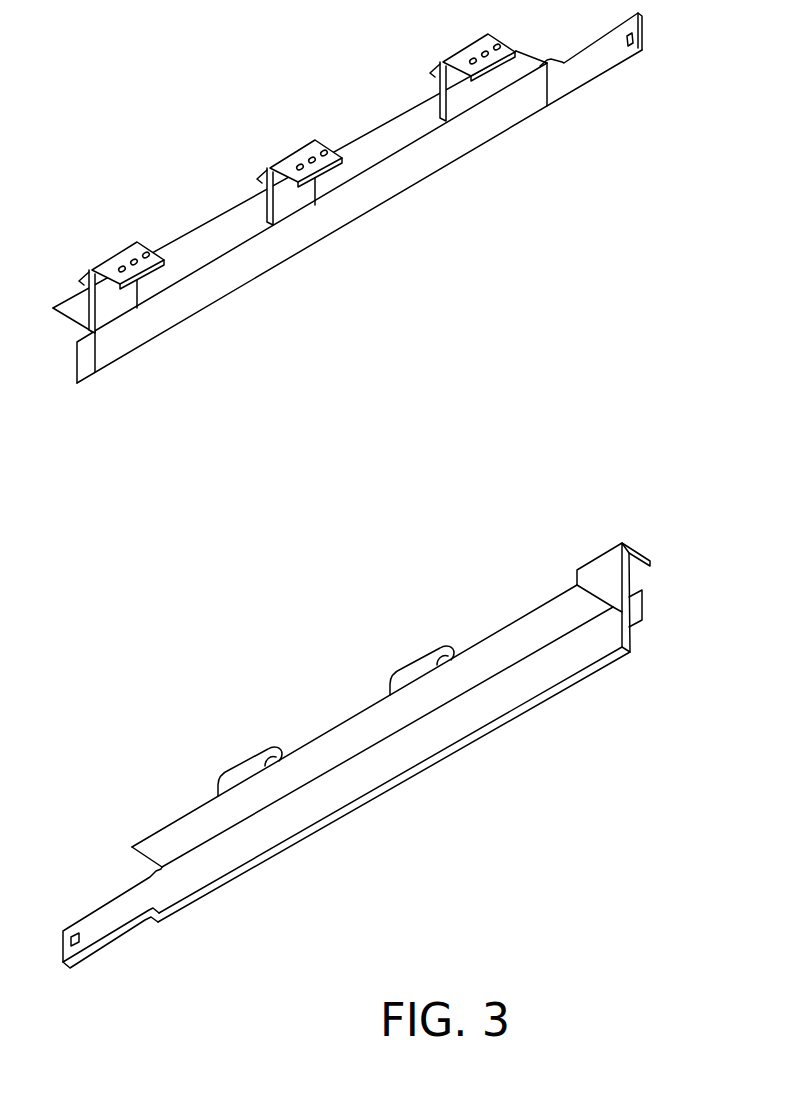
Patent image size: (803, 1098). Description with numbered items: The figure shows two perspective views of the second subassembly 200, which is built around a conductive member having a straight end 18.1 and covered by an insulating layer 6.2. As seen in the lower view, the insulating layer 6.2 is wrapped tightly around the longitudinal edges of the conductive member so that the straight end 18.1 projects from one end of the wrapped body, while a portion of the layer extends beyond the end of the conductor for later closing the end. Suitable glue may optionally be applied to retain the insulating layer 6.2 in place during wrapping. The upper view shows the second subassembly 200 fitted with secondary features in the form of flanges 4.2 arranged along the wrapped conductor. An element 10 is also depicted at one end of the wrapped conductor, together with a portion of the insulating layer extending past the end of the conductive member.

The flange 4.2 is at (167, 266).
The insulating layer 6.2 is at (432, 740).
The end plate 10 is at (641, 548).
The straight end 18.1 is at (115, 915).
The second subassembly 200 is at (376, 690).